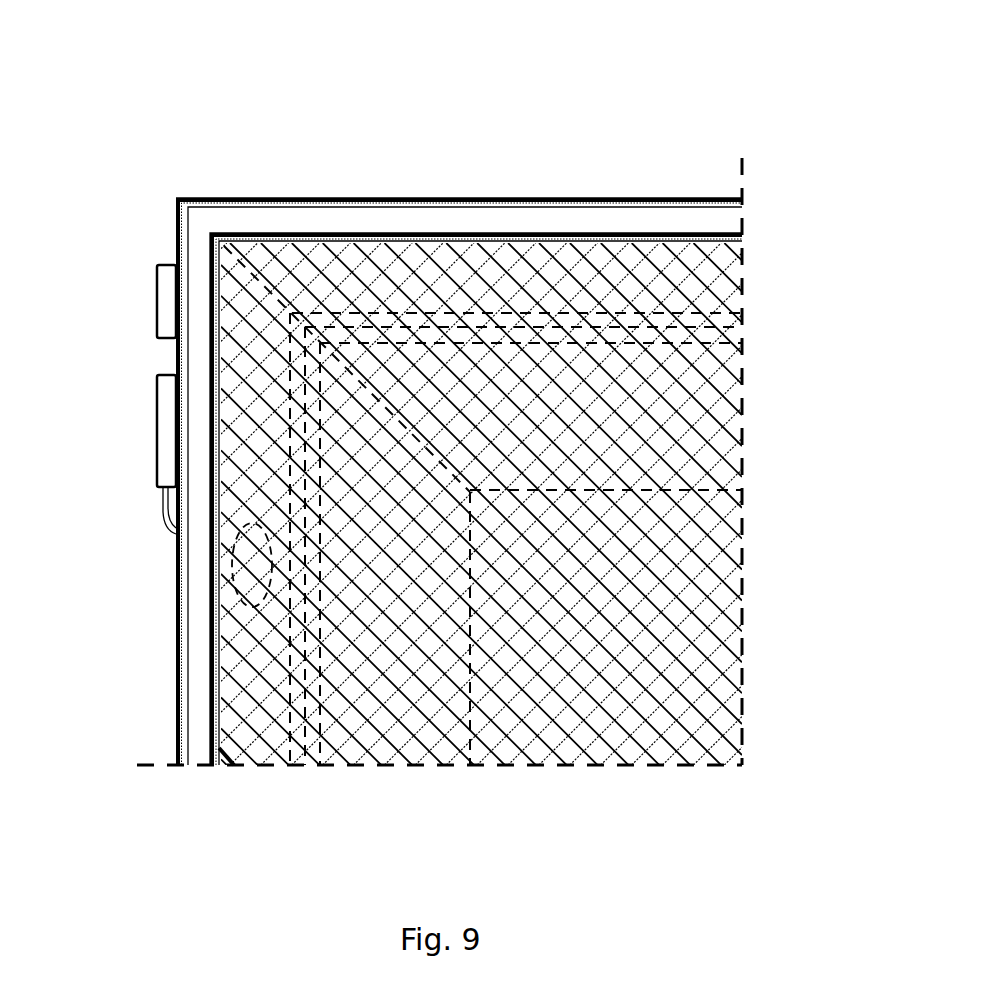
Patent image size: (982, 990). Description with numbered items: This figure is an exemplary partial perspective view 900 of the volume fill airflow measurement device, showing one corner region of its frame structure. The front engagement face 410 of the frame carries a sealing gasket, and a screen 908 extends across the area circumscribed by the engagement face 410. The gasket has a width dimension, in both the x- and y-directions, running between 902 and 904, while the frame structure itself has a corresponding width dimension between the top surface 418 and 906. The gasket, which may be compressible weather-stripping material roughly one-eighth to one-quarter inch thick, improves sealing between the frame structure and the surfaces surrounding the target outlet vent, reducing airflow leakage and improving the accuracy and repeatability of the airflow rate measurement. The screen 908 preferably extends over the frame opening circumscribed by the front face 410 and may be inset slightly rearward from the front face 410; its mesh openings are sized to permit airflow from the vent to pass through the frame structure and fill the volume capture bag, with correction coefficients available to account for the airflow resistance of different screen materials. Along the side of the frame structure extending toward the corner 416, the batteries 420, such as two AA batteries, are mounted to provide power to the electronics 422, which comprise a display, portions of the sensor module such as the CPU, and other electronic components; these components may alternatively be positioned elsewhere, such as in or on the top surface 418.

The partial perspective view 900 is at (713, 103).
The corner 416 is at (176, 198).
The top surface 418 is at (338, 200).
The front engagement face 410 is at (258, 198).
The gasket width boundary 902 is at (423, 205).
The gasket width boundary 904 is at (528, 232).
The frame structure width boundary 906 is at (595, 238).
The screen 908 is at (703, 417).
The batteries 420 is at (157, 288).
The electronics 422 is at (157, 401).